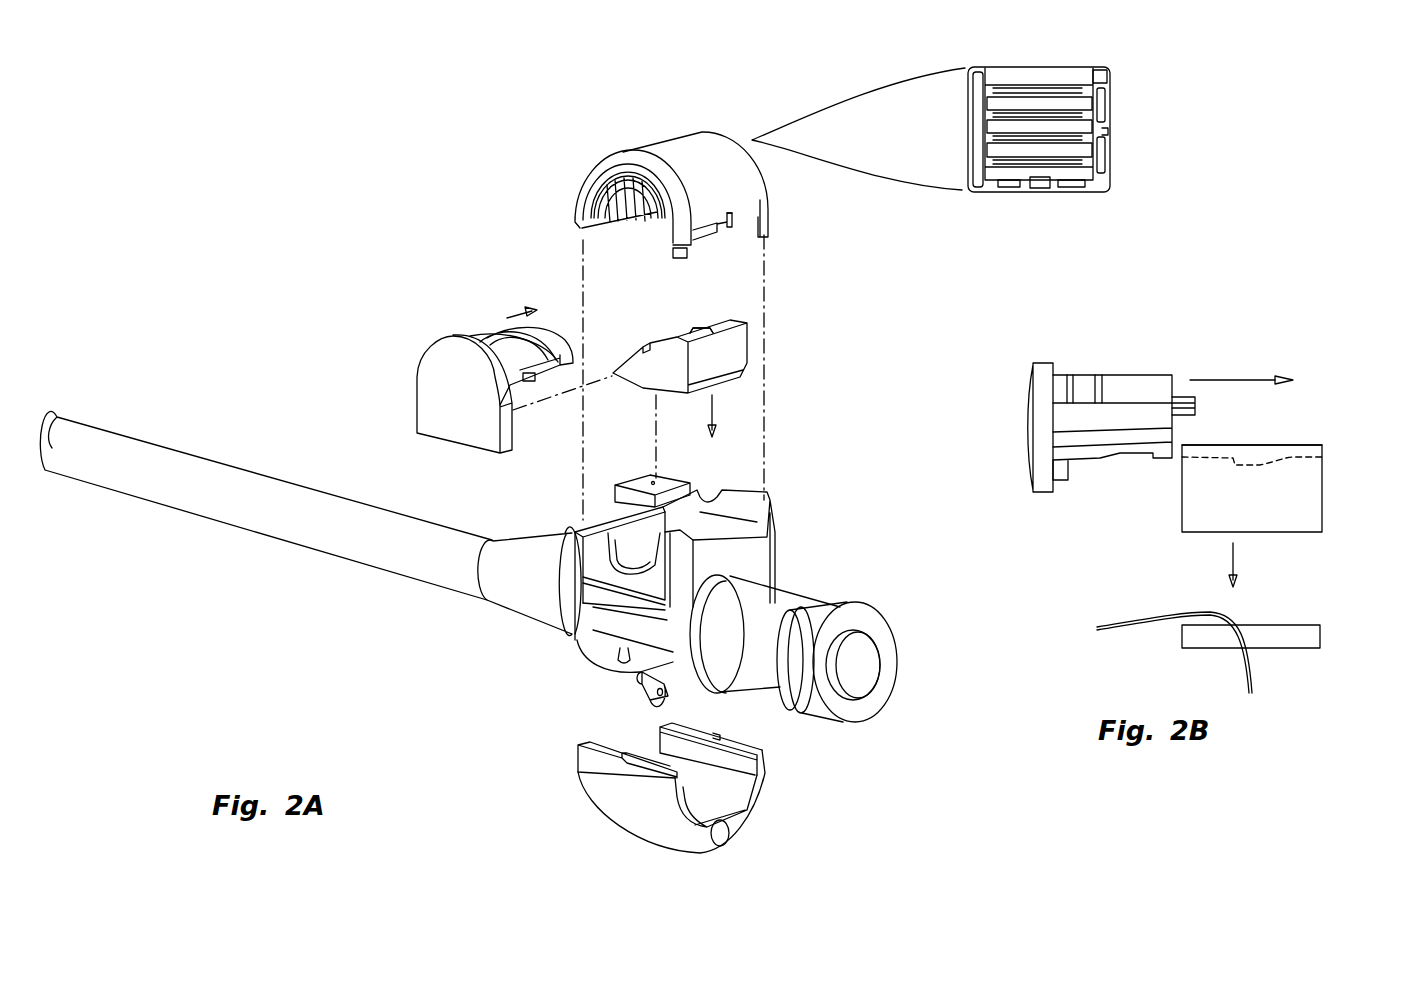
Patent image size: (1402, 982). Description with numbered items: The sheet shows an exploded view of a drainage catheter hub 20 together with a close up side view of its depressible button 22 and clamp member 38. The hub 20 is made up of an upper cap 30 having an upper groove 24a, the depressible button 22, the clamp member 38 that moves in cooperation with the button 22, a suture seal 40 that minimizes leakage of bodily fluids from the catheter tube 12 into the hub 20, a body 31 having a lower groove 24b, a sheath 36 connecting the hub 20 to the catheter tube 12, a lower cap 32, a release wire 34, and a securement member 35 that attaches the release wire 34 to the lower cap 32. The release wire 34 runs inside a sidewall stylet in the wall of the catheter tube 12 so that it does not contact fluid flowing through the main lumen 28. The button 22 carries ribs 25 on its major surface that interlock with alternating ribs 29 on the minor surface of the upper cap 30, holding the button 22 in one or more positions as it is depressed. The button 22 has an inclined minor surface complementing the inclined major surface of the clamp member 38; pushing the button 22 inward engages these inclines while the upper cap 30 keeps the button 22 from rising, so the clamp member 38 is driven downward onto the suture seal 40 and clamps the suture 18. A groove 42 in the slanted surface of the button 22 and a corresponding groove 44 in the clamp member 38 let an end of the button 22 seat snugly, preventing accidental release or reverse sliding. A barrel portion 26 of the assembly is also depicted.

In FIG. 2A, the catheter tube 12 is at (233, 513).
In FIG. 2B, the suture 18 is at (1148, 620).
In FIG. 2A, the drainage catheter hub 20 is at (865, 321).
In FIG. 2A, the depressible button 22 is at (440, 370).
In FIG. 2B, the depressible button 22 is at (1028, 427).
In FIG. 2A, the upper groove 24a is at (725, 212).
In FIG. 2A, the lower groove 24b is at (727, 535).
In FIG. 2A, the ribs 25 is at (500, 345).
In FIG. 2B, the ribs 25 is at (1097, 373).
In FIG. 2A, the cylindrical barrel 26 is at (820, 584).
In FIG. 2A, the lumen 28 is at (852, 667).
In FIG. 2A, the ribs 29 is at (632, 223).
In FIG. 2A, the upper cap 30 is at (703, 150).
In FIG. 2A, the body 31 is at (777, 523).
In FIG. 2A, the lower cap 32 is at (617, 807).
In FIG. 2A, the release wire 34 is at (612, 678).
In FIG. 2A, the securement member 35 is at (650, 678).
In FIG. 2A, the sheath 36 is at (530, 600).
In FIG. 2A, the clamp member 38 is at (653, 360).
In FIG. 2B, the clamp member 38 is at (1275, 512).
In FIG. 2A, the suture seal 40 is at (630, 470).
In FIG. 2B, the suture seal 40 is at (1317, 637).
In FIG. 2A, the groove 42 is at (553, 364).
In FIG. 2B, the groove 42 is at (1142, 458).
In FIG. 2A, the groove 44 is at (730, 327).
In FIG. 2B, the groove 44 is at (1243, 458).